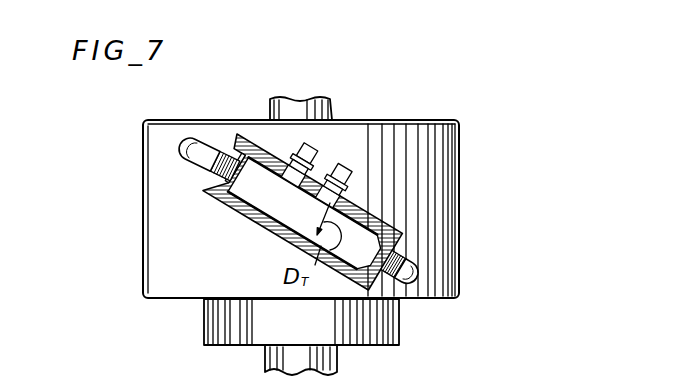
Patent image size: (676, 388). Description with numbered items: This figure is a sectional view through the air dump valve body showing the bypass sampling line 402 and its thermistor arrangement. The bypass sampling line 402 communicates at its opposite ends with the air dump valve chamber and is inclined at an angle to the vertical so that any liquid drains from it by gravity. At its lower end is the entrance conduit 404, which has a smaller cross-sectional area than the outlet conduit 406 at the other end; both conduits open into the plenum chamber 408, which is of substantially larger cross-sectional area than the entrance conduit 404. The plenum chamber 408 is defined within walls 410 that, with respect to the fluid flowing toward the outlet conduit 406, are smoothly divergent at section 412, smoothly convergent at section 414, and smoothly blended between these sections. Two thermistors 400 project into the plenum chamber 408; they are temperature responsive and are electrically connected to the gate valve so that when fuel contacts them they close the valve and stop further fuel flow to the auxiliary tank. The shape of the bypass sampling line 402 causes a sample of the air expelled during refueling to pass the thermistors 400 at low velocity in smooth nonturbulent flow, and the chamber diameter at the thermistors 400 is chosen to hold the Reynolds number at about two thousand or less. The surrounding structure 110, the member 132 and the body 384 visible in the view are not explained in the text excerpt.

The housing 110 is at (462, 121).
The shaft 132 is at (297, 101).
The block body 384 is at (148, 224).
The thermistors 400 is at (341, 161).
The bypass sampling line 402 is at (183, 124).
The entrance conduit 404 is at (418, 270).
The outlet conduit 406 is at (186, 153).
The plenum chamber 408 is at (287, 213).
The walls 410 is at (265, 200).
The divergent section 412 is at (392, 231).
The convergent section 414 is at (253, 163).